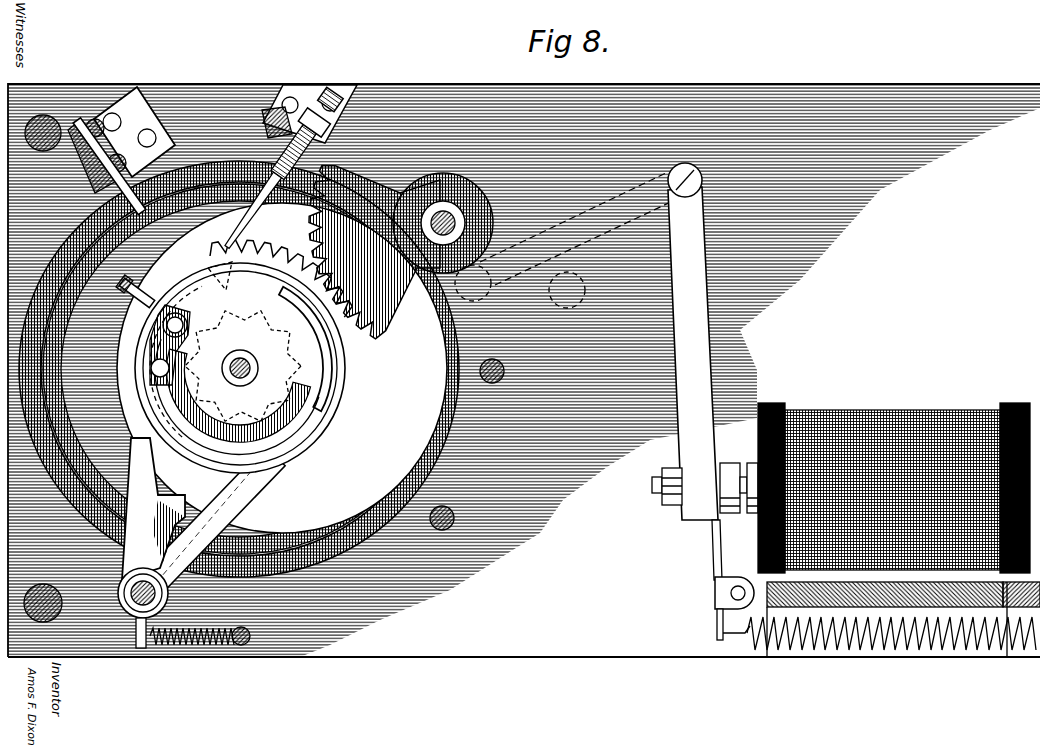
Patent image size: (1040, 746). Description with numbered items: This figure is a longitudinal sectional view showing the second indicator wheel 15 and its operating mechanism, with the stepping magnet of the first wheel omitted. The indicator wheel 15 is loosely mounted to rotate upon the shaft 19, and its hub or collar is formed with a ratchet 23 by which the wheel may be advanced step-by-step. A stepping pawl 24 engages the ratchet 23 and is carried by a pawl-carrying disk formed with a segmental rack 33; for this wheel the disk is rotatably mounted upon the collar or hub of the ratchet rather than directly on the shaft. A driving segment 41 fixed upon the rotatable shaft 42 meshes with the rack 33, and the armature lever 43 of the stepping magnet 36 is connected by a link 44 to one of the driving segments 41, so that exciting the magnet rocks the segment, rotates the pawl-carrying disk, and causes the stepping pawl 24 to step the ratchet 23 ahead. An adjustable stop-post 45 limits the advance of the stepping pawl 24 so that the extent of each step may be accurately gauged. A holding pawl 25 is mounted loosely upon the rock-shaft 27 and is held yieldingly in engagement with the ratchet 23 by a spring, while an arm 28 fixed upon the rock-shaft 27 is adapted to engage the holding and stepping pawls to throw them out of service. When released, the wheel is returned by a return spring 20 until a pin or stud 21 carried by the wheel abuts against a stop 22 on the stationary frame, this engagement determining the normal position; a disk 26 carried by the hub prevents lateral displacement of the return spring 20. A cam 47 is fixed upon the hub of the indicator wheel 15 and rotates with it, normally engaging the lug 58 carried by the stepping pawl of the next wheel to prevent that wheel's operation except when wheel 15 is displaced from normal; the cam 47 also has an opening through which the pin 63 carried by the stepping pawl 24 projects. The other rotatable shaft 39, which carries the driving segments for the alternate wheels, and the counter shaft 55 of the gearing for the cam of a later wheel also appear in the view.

The indicator wheel 15 is at (220, 162).
The shaft 19 is at (240, 358).
The return spring 20 is at (195, 190).
The pin or stud 21 is at (109, 166).
The stop 22 is at (121, 140).
The ratchet 23 is at (243, 366).
The stepping pawl 24 is at (152, 335).
The holding pawl 25 is at (236, 508).
The disk 26 is at (282, 368).
The rock-shaft 27 is at (131, 592).
The arm 28 is at (153, 509).
The segmental rack 33 is at (360, 340).
The stepping magnet 36 is at (870, 412).
The rotatable shaft 39 is at (452, 528).
The driving segment 41 is at (401, 252).
The rotatable shaft 42 is at (432, 224).
The armature lever 43 is at (700, 322).
The link 44 is at (565, 240).
The adjustable stop-post 45 is at (258, 218).
The cam 47 is at (240, 367).
The counter shaft 55 is at (500, 379).
The lug 58 is at (120, 290).
The pin 63 is at (165, 325).